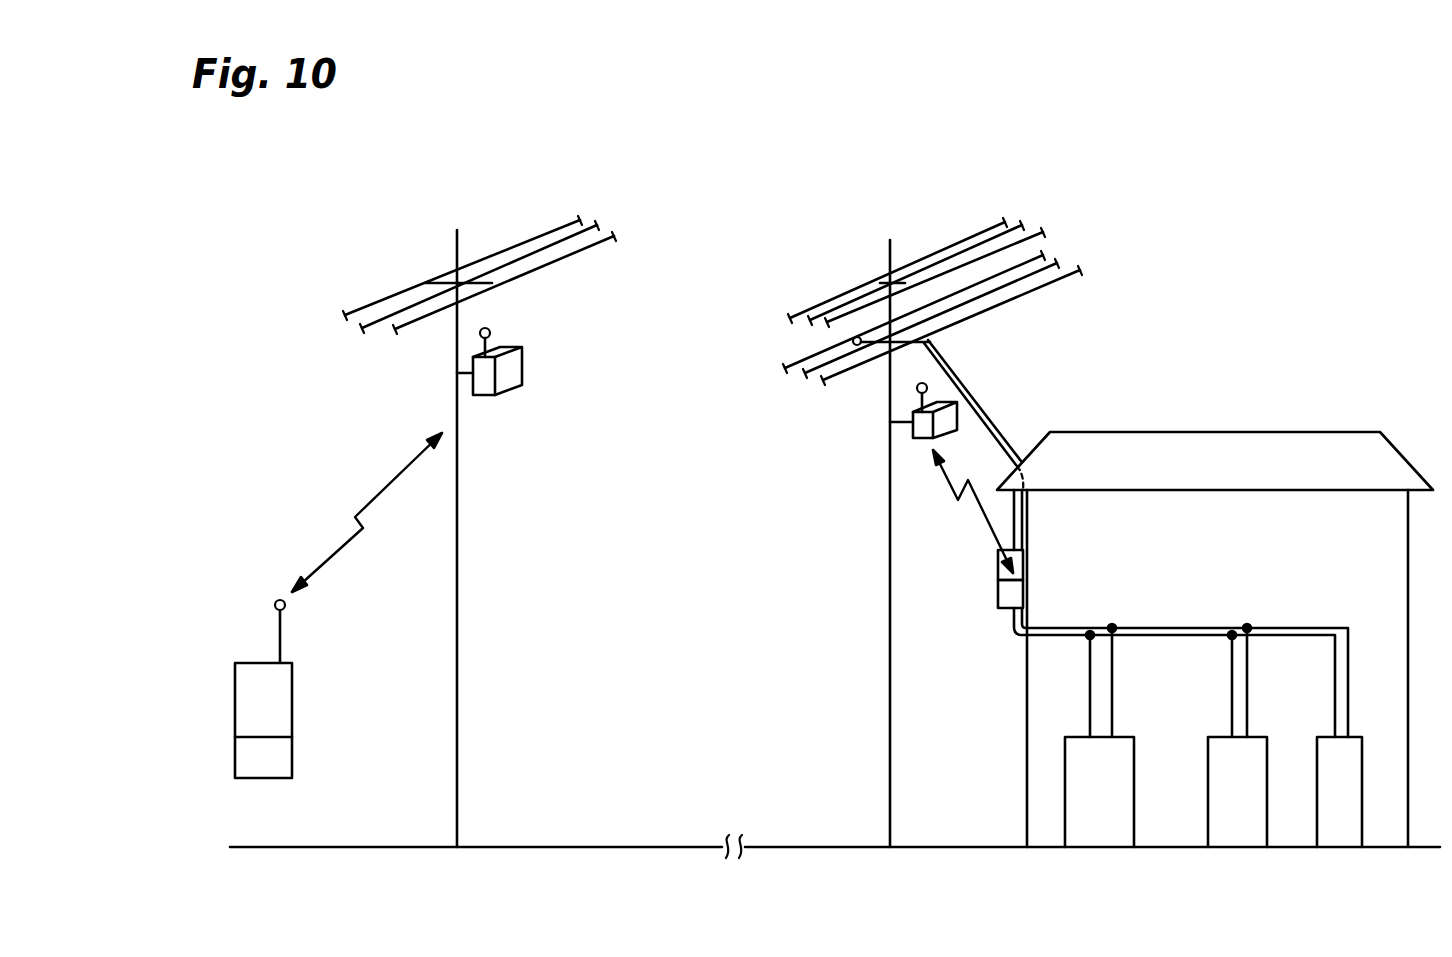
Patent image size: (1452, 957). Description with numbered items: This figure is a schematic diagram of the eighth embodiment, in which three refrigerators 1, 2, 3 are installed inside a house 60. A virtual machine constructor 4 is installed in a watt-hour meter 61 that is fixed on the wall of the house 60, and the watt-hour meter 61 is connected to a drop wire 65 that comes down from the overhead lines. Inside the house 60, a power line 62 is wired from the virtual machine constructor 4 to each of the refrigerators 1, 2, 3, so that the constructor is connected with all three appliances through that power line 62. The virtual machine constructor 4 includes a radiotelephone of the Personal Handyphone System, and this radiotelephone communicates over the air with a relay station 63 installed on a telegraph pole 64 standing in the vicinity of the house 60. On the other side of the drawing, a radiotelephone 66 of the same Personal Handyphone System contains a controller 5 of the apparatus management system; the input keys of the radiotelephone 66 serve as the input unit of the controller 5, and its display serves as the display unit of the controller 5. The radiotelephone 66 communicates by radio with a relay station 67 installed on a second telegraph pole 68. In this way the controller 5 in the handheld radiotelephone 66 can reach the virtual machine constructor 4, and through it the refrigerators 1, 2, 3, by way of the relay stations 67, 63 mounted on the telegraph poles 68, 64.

The refrigerator 1 is at (1088, 836).
The refrigerator 2 is at (1230, 835).
The refrigerator 3 is at (1340, 836).
The virtual machine constructor 4 is at (998, 592).
The controller 5 is at (290, 760).
The house 60 is at (1254, 432).
The watt-hour meter 61 is at (998, 567).
The power line 62 is at (1276, 628).
The relay station 63 is at (912, 436).
The telegraph pole 64 is at (888, 600).
The drop wire 65 is at (978, 402).
The radiotelephone 66 is at (300, 689).
The relay station 67 is at (522, 372).
The telegraph pole 68 is at (458, 598).